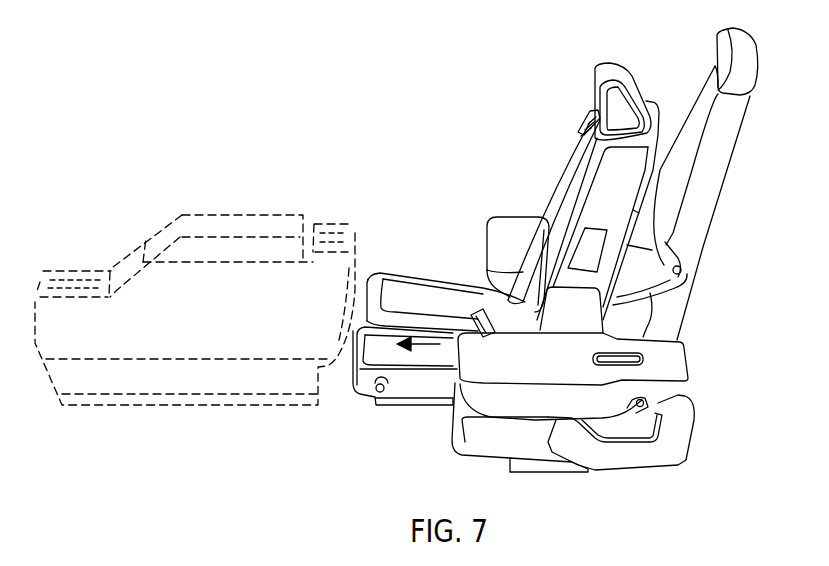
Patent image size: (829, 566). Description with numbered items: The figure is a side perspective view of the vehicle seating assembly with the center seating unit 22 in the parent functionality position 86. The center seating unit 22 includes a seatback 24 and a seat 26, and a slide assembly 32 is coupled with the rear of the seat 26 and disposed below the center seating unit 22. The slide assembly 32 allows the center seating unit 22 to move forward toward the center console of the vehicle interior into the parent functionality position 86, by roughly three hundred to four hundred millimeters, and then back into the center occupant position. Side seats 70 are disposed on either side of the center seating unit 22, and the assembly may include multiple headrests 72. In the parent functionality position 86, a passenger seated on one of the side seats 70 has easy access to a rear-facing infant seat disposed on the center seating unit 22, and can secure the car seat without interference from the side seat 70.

The parent functionality position 86 is at (417, 138).
The center seating unit 22 is at (577, 192).
The seatback 24 is at (567, 213).
The seat 26 is at (400, 288).
The slide assembly 32 is at (390, 400).
The side seats 70 is at (693, 100).
The headrests 72 is at (595, 68).